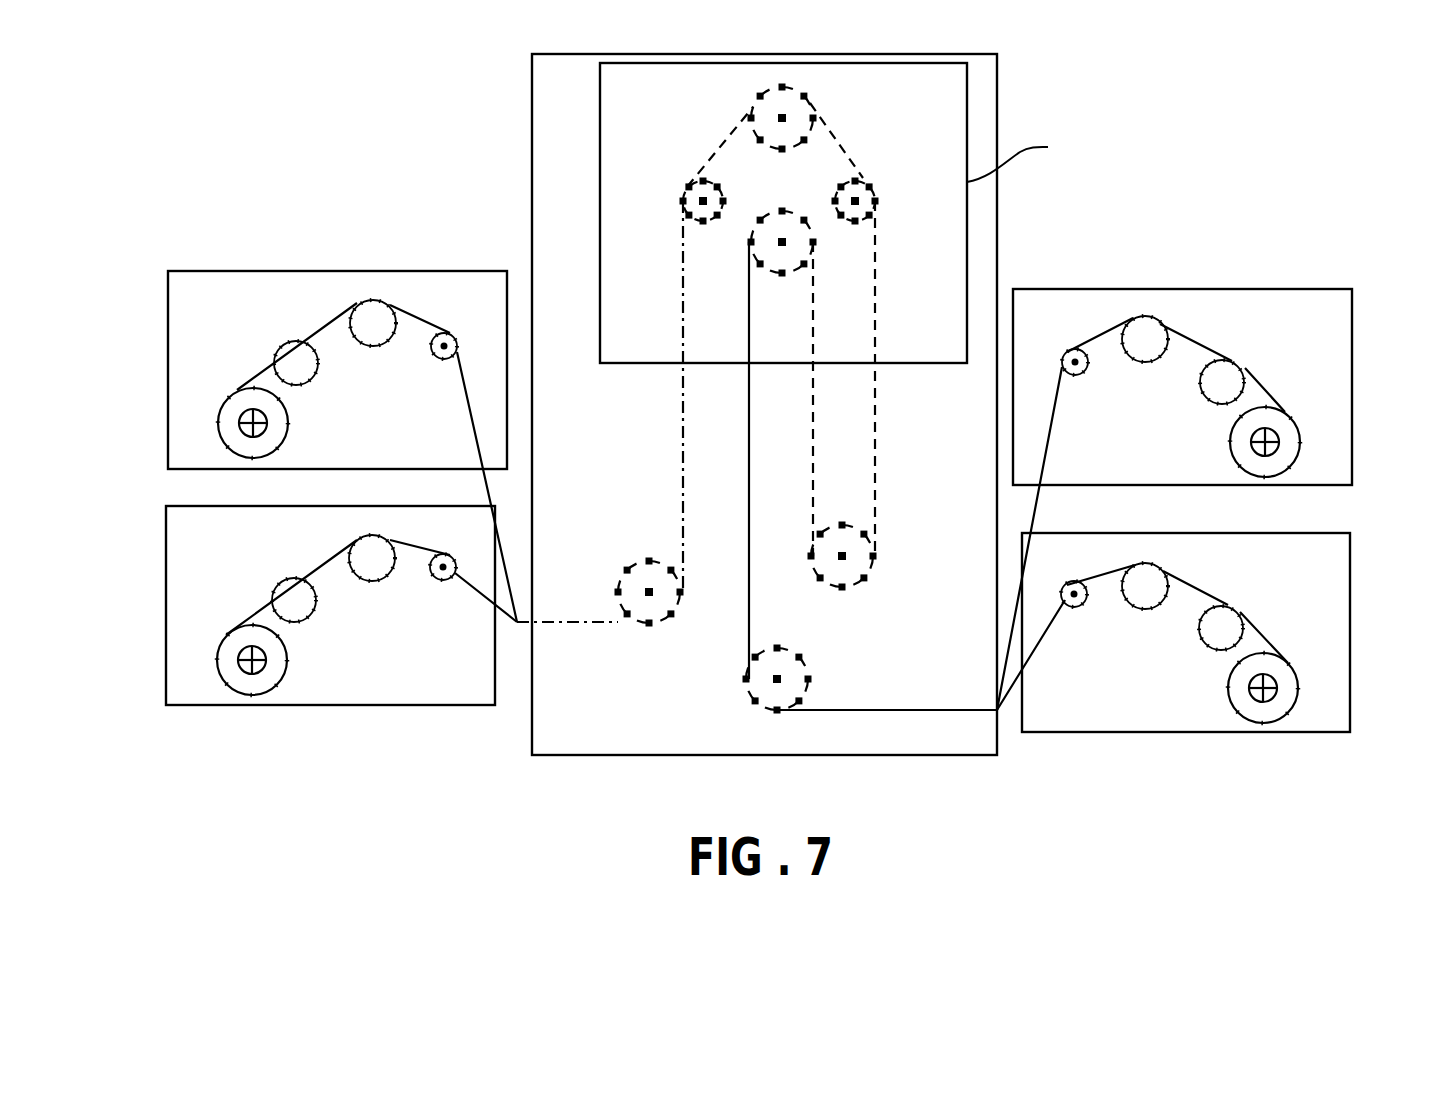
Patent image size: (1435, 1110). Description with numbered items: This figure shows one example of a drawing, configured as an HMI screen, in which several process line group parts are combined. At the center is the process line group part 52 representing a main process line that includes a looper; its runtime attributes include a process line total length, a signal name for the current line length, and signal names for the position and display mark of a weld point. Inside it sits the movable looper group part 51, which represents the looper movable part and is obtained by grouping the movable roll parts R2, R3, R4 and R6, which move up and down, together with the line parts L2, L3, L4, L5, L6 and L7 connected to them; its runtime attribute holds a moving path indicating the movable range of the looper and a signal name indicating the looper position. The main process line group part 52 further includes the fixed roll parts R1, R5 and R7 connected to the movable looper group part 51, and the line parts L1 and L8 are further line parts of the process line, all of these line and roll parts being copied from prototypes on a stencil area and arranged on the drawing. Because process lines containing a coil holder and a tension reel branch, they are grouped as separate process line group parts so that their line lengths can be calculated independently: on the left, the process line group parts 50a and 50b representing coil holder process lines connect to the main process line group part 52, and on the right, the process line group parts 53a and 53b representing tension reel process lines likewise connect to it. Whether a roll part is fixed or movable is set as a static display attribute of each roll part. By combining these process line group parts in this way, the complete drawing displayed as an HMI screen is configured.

The process line group part 52 is at (1000, 63).
The movable looper group part 51 is at (967, 100).
The process line group part 50a is at (168, 392).
The process line group part 50b is at (166, 614).
The process line group part 53a is at (1352, 393).
The process line group part 53b is at (1350, 615).
The roll part R1 is at (642, 562).
The roll part R2 is at (681, 203).
The roll part R3 is at (792, 92).
The roll part R4 is at (877, 196).
The roll part R5 is at (870, 572).
The roll part R6 is at (785, 212).
The roll part R7 is at (746, 690).
The line part L1 is at (580, 625).
The line part L2 is at (683, 318).
The line part L3 is at (722, 148).
The line part L4 is at (840, 140).
The line part L5 is at (877, 308).
The line part L6 is at (813, 315).
The line part L7 is at (750, 620).
The line part L8 is at (927, 708).